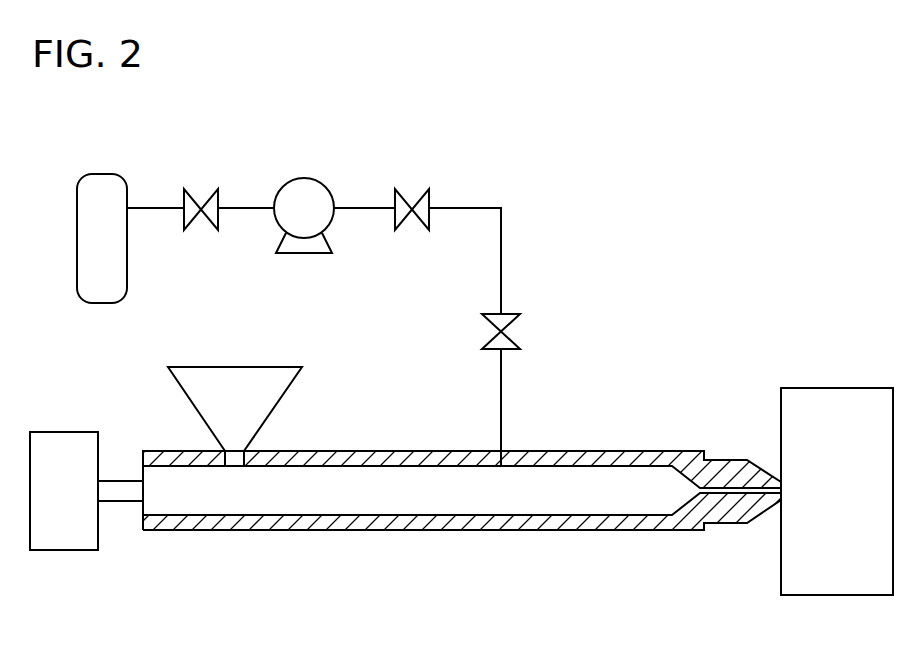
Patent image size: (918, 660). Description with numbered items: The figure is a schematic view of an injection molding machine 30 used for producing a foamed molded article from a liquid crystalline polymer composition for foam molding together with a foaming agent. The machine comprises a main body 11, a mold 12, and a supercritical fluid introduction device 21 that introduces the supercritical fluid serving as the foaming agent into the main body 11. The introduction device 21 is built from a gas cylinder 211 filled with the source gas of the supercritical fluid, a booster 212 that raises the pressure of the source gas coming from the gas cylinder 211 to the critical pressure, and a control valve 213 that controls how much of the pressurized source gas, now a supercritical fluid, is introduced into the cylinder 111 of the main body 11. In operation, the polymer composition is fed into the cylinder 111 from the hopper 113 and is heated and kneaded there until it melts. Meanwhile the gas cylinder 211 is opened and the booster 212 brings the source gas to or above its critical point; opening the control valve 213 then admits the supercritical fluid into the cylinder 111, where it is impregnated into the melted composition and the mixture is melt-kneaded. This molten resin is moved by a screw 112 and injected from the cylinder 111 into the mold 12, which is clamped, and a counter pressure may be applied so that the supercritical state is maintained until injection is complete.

The main body 11 is at (466, 492).
The cylinder 111 is at (583, 524).
The screw 112 is at (418, 504).
The hopper 113 is at (288, 383).
The mold 12 is at (821, 397).
The supercritical fluid introduction device 21 is at (504, 259).
The gas cylinder 211 is at (102, 177).
The booster 212 is at (304, 182).
The control valve 213 is at (423, 195).
The injection molding machine 30 is at (635, 245).